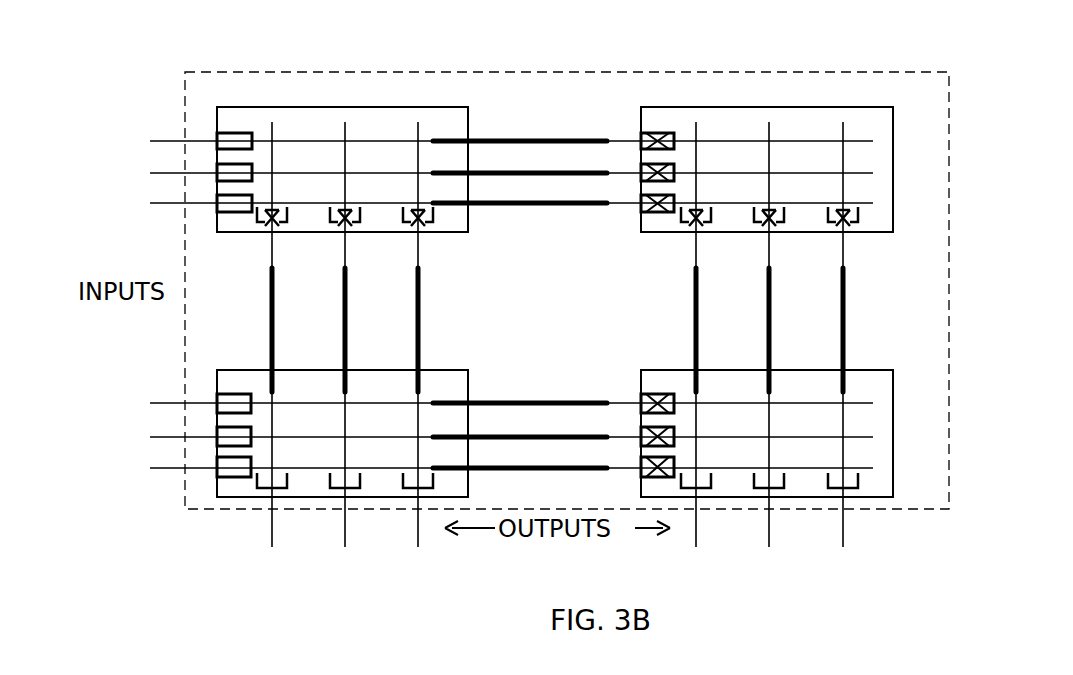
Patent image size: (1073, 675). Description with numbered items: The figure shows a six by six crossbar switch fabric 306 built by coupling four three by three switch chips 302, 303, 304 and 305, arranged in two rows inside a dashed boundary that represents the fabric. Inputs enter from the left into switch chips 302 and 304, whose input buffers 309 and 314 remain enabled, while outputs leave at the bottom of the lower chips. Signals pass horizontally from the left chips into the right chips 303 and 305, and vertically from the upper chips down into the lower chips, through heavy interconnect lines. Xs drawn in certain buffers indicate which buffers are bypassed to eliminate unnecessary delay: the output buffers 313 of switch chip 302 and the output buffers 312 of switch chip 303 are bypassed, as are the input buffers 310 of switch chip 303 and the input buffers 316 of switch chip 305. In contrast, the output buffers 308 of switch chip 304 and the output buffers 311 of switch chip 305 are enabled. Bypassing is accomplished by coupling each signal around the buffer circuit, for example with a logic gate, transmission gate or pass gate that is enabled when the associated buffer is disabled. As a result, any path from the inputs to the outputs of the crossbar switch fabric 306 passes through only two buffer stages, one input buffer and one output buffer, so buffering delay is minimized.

The switch chip 302 is at (435, 102).
The switch chip 303 is at (845, 100).
The switch chip 304 is at (217, 369).
The switch chip 305 is at (898, 392).
The crossbar switch fabric 306 is at (948, 182).
The output buffers 308 is at (355, 488).
The input buffers 309 is at (228, 127).
The input buffers 310 is at (660, 127).
The output buffers 311 is at (868, 480).
The output buffers 312 is at (875, 216).
The output buffers 313 is at (443, 217).
The input buffers 314 is at (235, 483).
The input buffers 316 is at (663, 392).